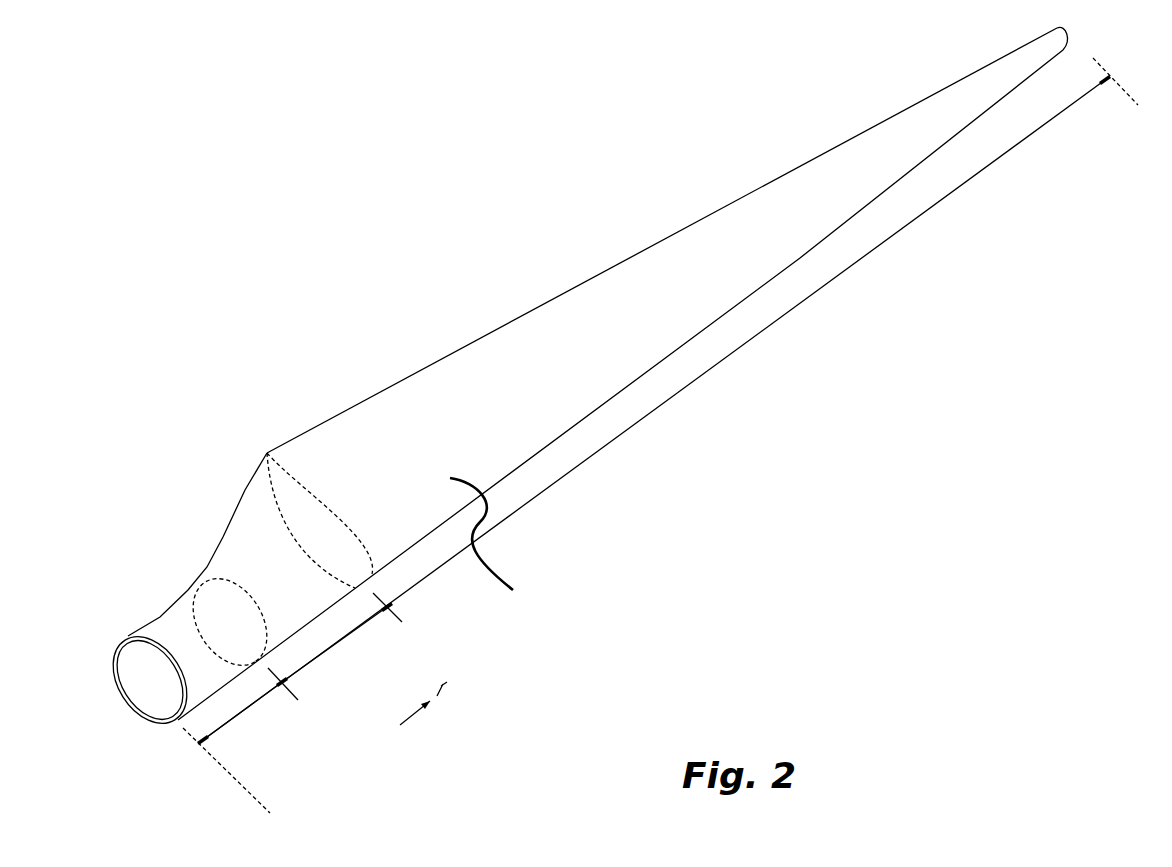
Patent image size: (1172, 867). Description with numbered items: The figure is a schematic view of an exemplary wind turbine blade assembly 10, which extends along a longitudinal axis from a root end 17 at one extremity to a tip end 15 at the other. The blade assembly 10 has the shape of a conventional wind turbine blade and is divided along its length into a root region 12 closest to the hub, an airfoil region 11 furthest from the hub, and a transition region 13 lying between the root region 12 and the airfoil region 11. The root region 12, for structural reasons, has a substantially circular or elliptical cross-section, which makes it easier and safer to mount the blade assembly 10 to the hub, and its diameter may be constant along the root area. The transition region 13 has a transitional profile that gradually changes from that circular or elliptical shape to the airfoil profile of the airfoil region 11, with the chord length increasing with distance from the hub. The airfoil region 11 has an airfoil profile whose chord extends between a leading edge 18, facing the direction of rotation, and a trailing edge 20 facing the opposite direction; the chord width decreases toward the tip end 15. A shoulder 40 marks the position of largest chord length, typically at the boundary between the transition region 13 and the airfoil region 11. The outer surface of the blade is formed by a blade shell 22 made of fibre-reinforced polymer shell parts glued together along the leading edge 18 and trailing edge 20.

The wind turbine blade assembly 10 is at (620, 420).
The airfoil region 11 is at (675, 395).
The root region 12 is at (247, 712).
The transition region 13 is at (335, 642).
The tip end 15 is at (1068, 35).
The root end 17 is at (137, 665).
The leading edge 18 is at (778, 275).
The trailing edge 20 is at (655, 242).
The blade shell 22 is at (500, 552).
The shoulder 40 is at (267, 452).